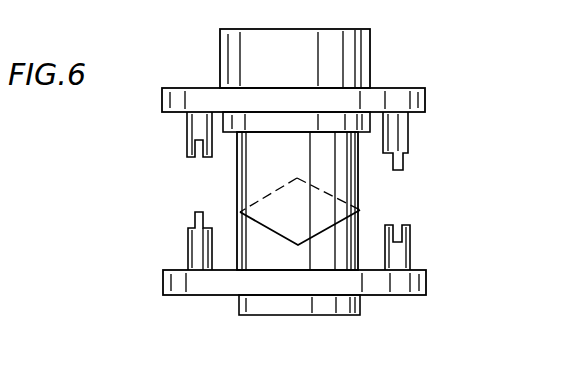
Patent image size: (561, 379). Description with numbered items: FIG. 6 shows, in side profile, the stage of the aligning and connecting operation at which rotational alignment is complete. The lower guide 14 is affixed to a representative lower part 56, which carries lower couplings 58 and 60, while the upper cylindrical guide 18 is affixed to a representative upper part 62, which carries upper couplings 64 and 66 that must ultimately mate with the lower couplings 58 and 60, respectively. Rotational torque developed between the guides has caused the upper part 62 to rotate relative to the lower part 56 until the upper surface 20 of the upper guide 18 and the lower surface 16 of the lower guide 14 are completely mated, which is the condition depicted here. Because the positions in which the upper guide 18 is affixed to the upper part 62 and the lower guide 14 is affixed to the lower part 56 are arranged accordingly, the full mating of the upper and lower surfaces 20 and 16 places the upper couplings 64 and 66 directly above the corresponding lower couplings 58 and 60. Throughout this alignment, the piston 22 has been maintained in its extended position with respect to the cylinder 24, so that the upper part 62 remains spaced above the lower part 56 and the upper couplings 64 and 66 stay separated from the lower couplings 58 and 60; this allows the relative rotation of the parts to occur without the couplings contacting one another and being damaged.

The lower guide 14 is at (237, 240).
The lower surface 16 is at (328, 233).
The upper cylindrical guide 18 is at (237, 168).
The upper surface 20 is at (352, 198).
The piston 22 is at (237, 150).
The cylinder 24 is at (370, 43).
The lower part 56 is at (388, 296).
The lower coupling 58 is at (195, 219).
The lower coupling 60 is at (407, 224).
The upper part 62 is at (404, 88).
The upper coupling 64 is at (187, 143).
The upper coupling 66 is at (402, 164).